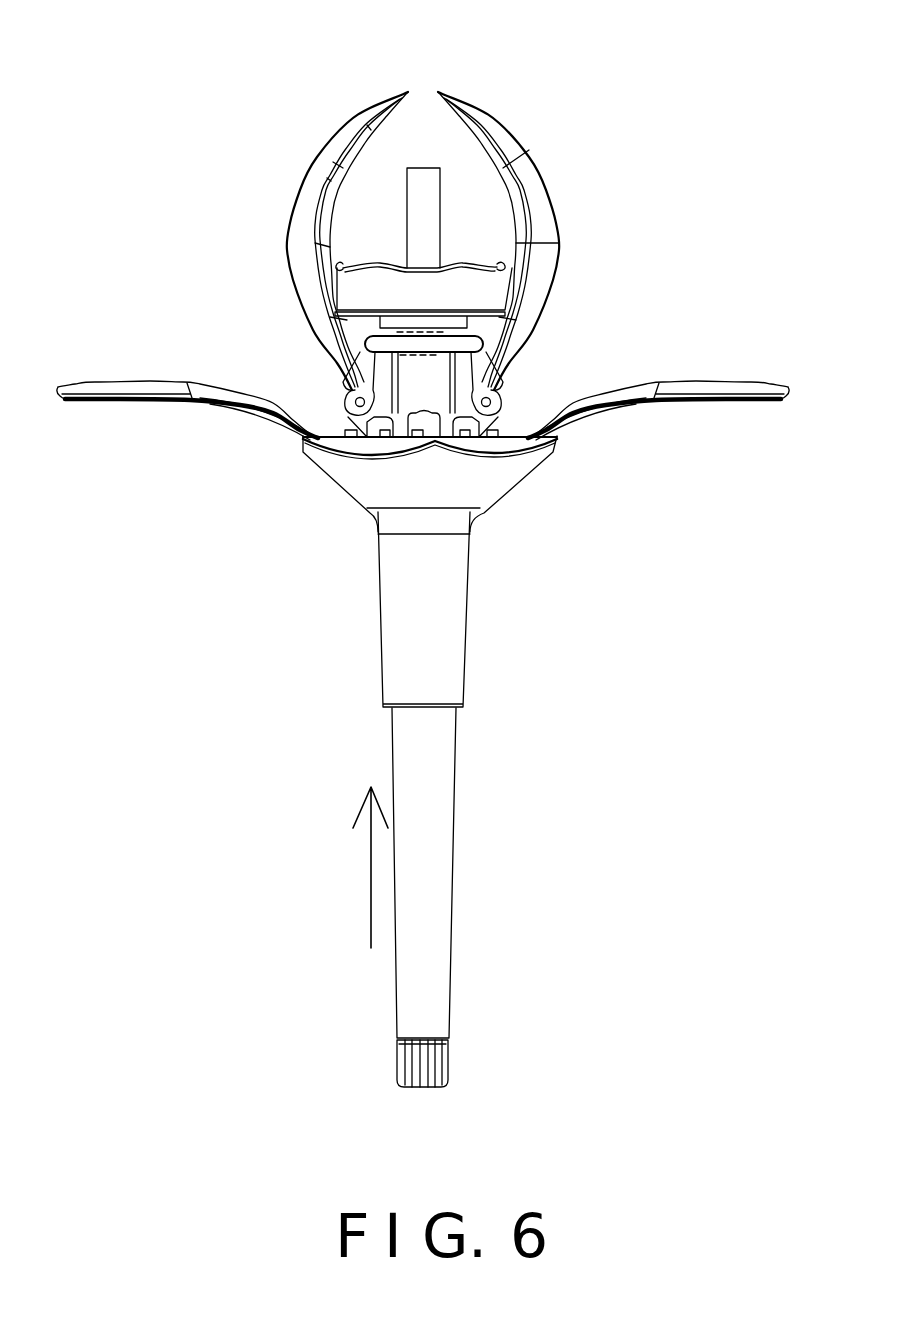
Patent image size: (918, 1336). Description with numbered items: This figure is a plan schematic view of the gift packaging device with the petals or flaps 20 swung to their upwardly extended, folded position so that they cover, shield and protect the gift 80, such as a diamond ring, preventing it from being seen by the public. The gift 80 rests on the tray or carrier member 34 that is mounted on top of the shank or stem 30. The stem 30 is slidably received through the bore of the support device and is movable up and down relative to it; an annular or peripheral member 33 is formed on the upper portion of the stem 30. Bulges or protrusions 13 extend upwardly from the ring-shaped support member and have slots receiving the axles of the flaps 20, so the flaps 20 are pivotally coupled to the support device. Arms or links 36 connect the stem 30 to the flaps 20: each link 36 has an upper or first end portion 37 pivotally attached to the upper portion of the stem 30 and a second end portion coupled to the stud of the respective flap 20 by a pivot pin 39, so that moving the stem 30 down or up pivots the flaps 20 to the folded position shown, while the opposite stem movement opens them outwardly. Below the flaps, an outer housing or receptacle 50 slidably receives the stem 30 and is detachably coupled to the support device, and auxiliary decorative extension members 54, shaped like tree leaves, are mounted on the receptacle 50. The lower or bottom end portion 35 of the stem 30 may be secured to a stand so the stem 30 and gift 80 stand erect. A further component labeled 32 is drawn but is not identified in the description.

The petals or flaps 20 is at (458, 103).
The gift 80 is at (430, 207).
The tray or carrier member 34 is at (380, 278).
The upper or first end portion 37 is at (500, 325).
The plate 32 is at (413, 333).
The arms or links 36 is at (378, 366).
The pivot pin 39 is at (497, 402).
The auxiliary blades or decorative extension members 54 is at (148, 390).
The bulges or protrusions 13 is at (423, 420).
The ring or annular or peripheral member 33 is at (440, 348).
The outer housing or receptacle 50 is at (438, 642).
The shank or stem 30 is at (432, 883).
The lower or bottom end portion 35 is at (425, 1065).